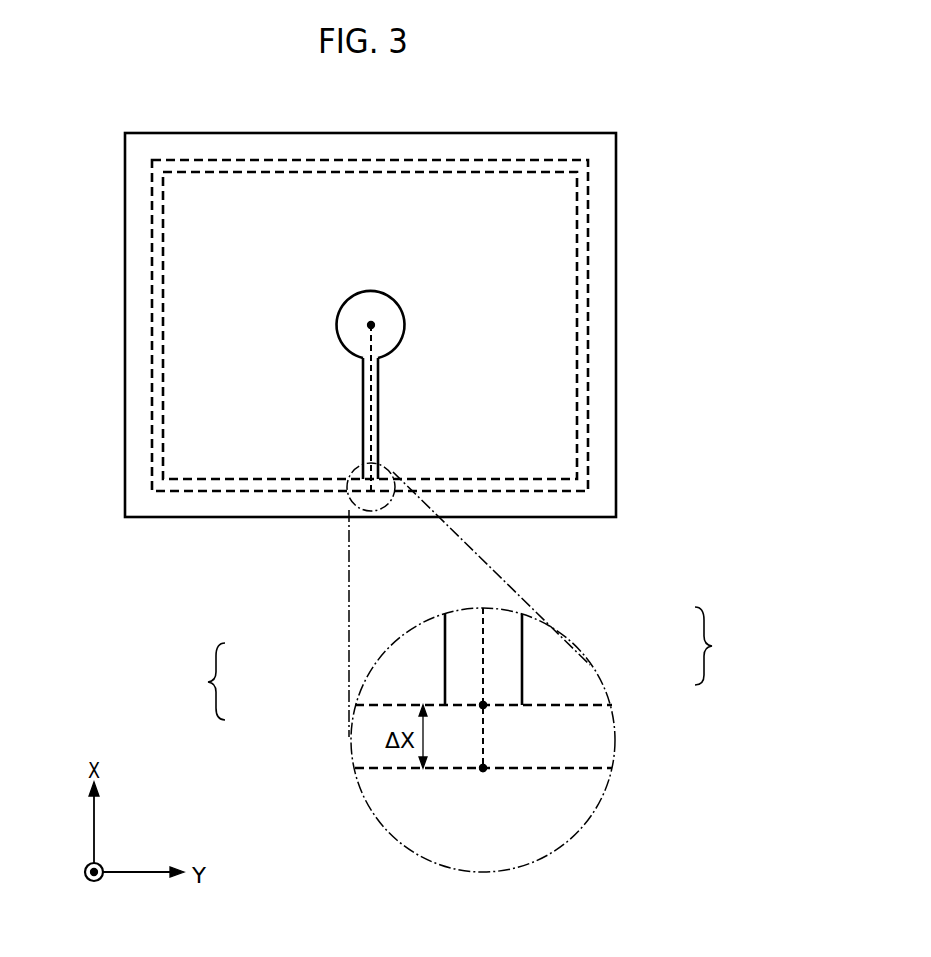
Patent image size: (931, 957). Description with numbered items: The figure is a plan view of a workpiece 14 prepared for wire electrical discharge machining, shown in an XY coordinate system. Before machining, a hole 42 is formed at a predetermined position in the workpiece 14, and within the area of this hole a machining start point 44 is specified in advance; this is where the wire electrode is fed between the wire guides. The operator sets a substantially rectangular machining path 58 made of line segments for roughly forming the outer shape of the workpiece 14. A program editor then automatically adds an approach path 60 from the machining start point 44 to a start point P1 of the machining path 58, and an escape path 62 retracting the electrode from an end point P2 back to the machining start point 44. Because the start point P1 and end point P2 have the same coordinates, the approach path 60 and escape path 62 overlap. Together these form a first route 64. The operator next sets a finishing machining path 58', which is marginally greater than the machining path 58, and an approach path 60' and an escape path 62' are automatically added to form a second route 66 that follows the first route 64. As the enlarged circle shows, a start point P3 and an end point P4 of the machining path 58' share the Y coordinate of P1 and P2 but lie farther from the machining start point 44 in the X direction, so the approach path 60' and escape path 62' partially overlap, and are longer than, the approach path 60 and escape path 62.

The workpiece 14 is at (548, 133).
The machining path 58 is at (407, 401).
The machining path 58' is at (387, 432).
The hole 42 is at (383, 294).
The machining start point 44 is at (370, 324).
The approach path 60 is at (528, 531).
The escape path 62 is at (505, 531).
The approach path 60' is at (355, 546).
The escape path 62' is at (388, 546).
The first route 64 is at (717, 646).
The second route 66 is at (205, 681).
The start point P1 is at (484, 706).
The end point P2 is at (506, 727).
The start point P3 is at (484, 769).
The end point P4 is at (506, 790).